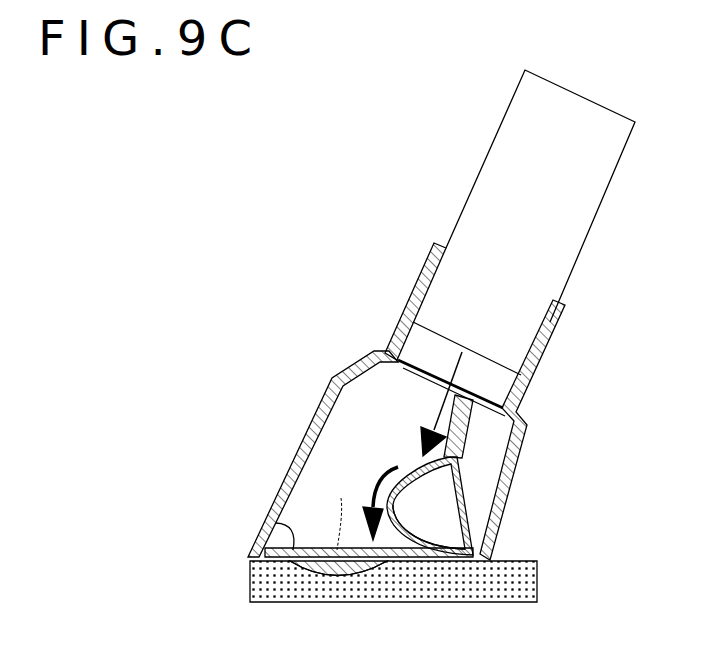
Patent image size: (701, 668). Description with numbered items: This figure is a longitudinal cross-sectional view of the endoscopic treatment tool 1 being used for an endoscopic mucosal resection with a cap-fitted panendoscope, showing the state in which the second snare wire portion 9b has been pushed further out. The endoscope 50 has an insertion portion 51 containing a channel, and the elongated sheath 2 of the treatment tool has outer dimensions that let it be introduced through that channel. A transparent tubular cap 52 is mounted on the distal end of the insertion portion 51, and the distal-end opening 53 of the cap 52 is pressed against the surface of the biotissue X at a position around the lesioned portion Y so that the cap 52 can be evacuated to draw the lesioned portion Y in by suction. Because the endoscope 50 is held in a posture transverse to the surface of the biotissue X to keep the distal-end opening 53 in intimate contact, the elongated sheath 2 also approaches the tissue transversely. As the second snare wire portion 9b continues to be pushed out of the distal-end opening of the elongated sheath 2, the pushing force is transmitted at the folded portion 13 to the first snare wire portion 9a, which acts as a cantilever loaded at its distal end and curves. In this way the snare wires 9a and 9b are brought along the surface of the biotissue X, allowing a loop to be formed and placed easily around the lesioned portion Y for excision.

The endoscopic treatment tool 1 is at (502, 424).
The elongated sheath 2 is at (473, 448).
The first snare wire portion 9a is at (470, 500).
The second snare wire portion 9b is at (410, 545).
The folded portion 13 is at (490, 533).
The endoscope 50 is at (400, 315).
The insertion portion 51 is at (498, 125).
The transparent tubular cap 52 is at (297, 447).
The distal-end opening of the cap 53 is at (265, 517).
The biotissue X is at (520, 561).
The lesioned portion Y is at (340, 510).